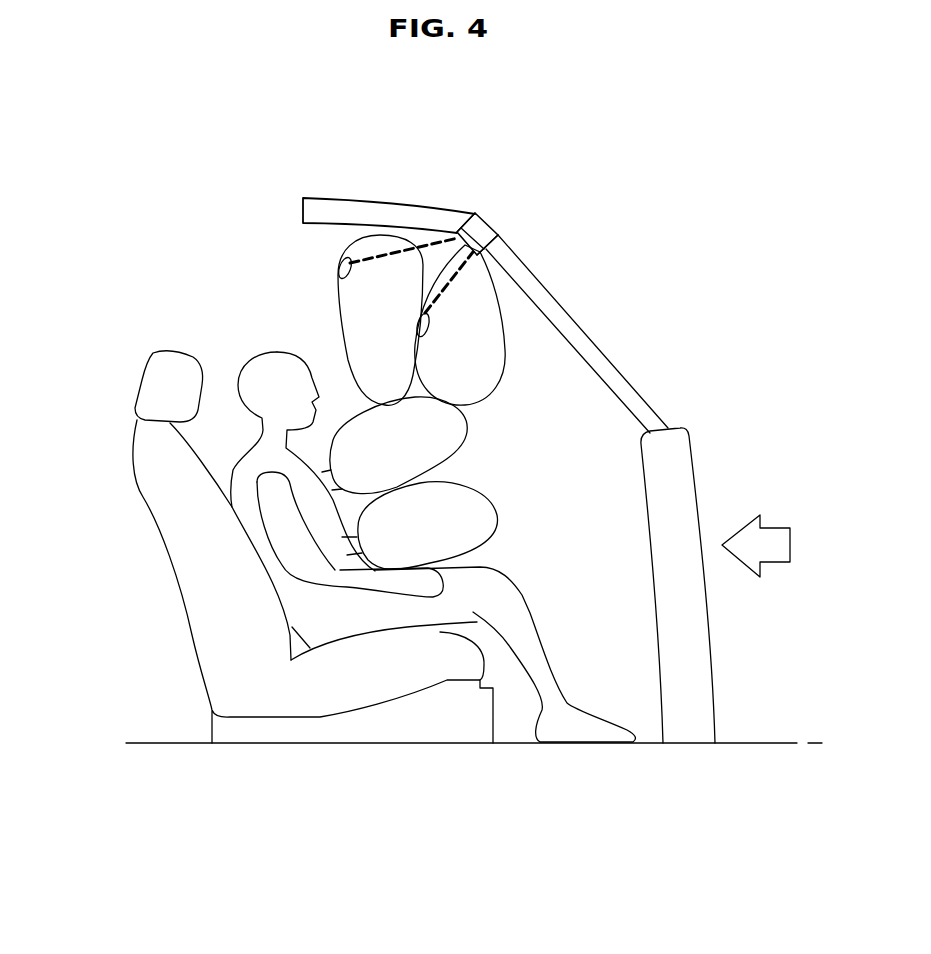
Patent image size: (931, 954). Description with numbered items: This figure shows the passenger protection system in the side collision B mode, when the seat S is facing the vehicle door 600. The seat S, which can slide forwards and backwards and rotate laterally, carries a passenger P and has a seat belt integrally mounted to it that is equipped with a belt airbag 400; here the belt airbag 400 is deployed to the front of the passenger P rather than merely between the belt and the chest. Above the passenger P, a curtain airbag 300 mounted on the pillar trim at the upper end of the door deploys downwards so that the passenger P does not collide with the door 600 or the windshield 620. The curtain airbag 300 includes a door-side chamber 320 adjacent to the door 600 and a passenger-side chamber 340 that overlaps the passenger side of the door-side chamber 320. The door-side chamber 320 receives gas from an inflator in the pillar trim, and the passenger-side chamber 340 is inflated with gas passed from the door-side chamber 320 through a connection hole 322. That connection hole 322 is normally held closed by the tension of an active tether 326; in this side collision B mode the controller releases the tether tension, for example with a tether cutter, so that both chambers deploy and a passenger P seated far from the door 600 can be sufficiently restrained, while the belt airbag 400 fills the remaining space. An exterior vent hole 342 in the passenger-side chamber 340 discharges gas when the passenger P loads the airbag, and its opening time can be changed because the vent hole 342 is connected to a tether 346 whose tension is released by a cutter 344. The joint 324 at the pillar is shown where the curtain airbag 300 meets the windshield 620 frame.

The curtain airbag 300 is at (478, 225).
The door-side chamber 320 is at (494, 322).
The connection hole 322 is at (417, 323).
The first inflator part 324 is at (499, 234).
The active tether 326 is at (489, 252).
The passenger-side chamber 340 is at (336, 291).
The exterior vent hole 342 is at (340, 262).
The cutter 344 is at (457, 230).
The tether 346 is at (379, 257).
The belt airbag 400 is at (383, 541).
The door 600 is at (687, 467).
The windshield 620 is at (620, 380).
The side collision mode B is at (777, 564).
The seat S is at (205, 628).
The passenger P is at (335, 610).